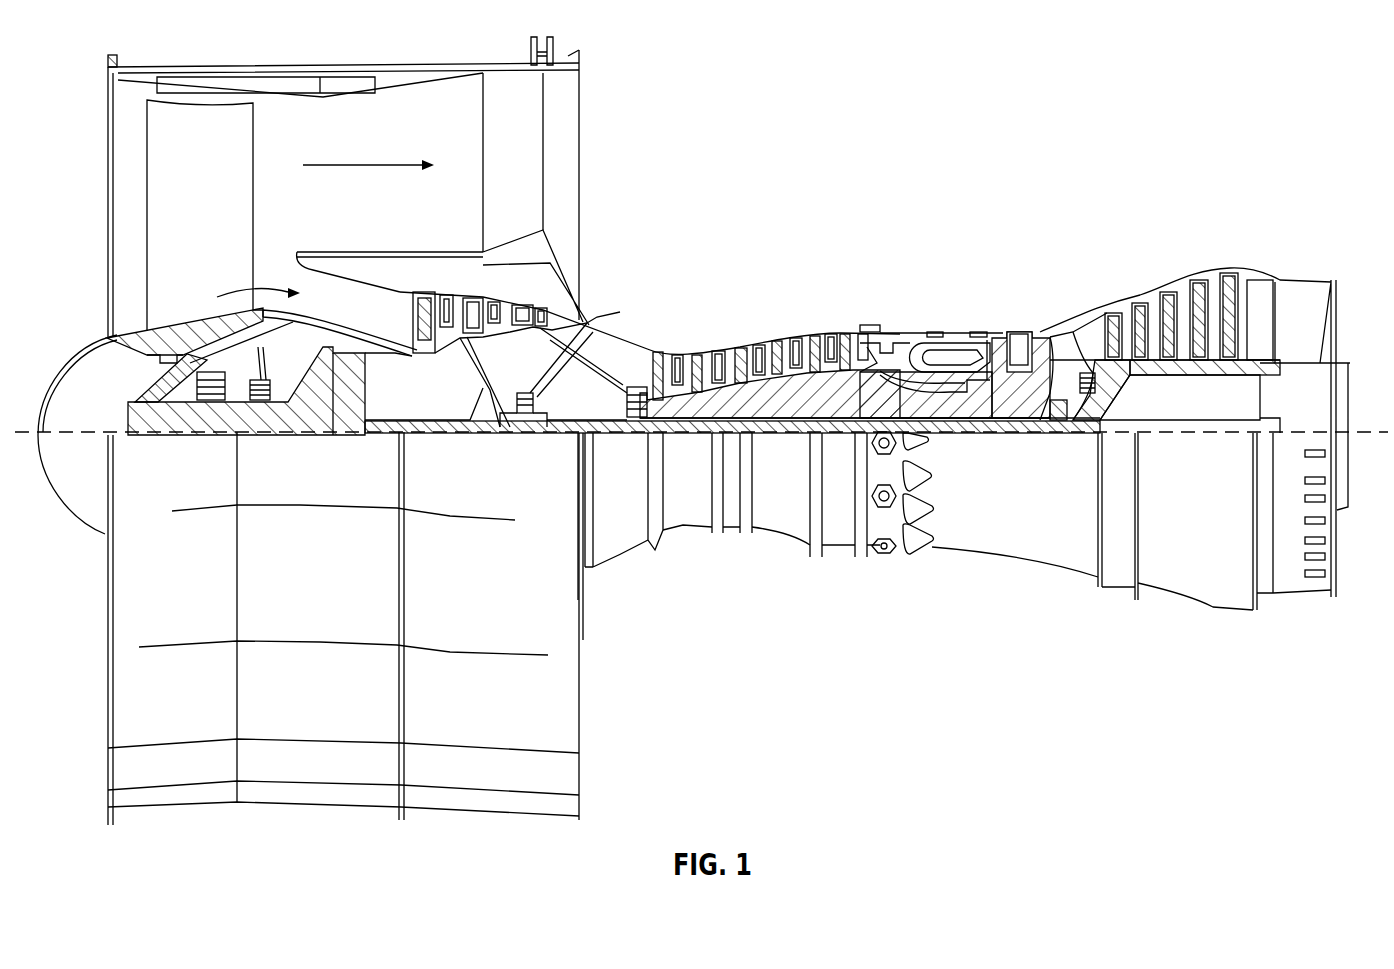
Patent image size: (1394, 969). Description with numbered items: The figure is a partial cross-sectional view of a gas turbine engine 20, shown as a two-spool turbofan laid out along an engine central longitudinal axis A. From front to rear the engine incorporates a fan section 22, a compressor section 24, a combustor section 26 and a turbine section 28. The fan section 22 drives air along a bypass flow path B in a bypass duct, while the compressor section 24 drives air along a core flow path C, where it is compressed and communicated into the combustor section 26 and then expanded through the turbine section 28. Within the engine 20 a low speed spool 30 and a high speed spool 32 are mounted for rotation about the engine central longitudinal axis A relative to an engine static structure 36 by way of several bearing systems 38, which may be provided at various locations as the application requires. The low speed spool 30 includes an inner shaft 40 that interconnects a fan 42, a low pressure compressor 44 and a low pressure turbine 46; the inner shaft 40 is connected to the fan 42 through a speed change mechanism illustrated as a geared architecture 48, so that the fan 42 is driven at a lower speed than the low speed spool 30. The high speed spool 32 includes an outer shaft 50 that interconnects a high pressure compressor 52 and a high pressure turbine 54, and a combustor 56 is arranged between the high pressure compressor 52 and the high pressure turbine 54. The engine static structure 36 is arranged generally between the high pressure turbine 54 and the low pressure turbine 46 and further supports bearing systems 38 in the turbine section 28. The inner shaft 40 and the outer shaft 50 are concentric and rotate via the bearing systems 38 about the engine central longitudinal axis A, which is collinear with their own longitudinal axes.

The gas turbine engine 20 is at (1158, 101).
The fan section 22 is at (242, 55).
The compressor section 24 is at (775, 292).
The combustor section 26 is at (934, 293).
The turbine section 28 is at (1090, 266).
The low speed spool 30 is at (801, 448).
The high speed spool 32 is at (873, 350).
The engine static structure 36 is at (841, 566).
The bearing systems 38 is at (207, 402).
The inner shaft 40 is at (596, 432).
The fan 42 is at (223, 189).
The low pressure compressor 44 is at (497, 312).
The low pressure turbine 46 is at (1187, 290).
The geared architecture 48 is at (347, 403).
The outer shaft 50 is at (963, 410).
The high pressure compressor 52 is at (760, 403).
The high pressure turbine 54 is at (1022, 332).
The combustor 56 is at (943, 353).
The engine central longitudinal axis A is at (1350, 431).
The bypass flow path B is at (370, 164).
The core flow path C is at (217, 297).